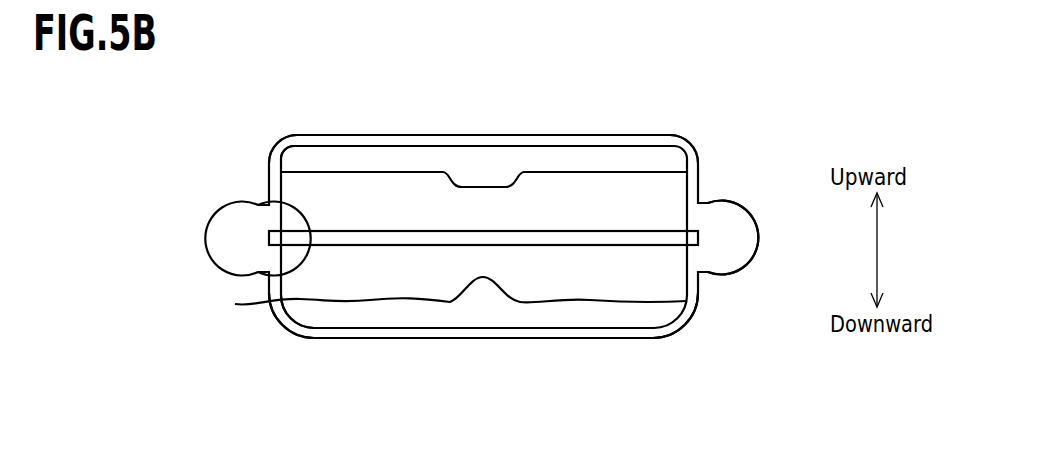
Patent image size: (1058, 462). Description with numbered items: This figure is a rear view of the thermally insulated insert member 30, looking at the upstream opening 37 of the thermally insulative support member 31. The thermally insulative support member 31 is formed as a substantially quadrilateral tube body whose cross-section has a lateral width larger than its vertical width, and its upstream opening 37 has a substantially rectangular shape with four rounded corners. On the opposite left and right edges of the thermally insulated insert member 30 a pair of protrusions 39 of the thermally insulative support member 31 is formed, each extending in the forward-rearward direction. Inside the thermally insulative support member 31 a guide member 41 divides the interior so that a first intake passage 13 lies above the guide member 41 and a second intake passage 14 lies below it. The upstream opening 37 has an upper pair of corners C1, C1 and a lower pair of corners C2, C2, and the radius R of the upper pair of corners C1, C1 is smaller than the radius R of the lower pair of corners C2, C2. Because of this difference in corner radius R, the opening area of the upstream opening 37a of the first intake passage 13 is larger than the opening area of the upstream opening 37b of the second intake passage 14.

The thermally insulated insert member 30 is at (508, 181).
The thermally insulative support member 31 is at (613, 136).
The guide member 41 is at (651, 231).
The upstream opening 37 is at (369, 146).
The upstream opening of the first intake passage 37a is at (468, 146).
The upstream opening of the second intake passage 37b is at (503, 328).
The first intake passage 13 is at (431, 213).
The second intake passage 14 is at (431, 287).
The protrusions 39 is at (238, 237).
The upper pair of corners C1 is at (290, 150).
The lower pair of corners C2 is at (305, 328).
The radius R is at (307, 172).